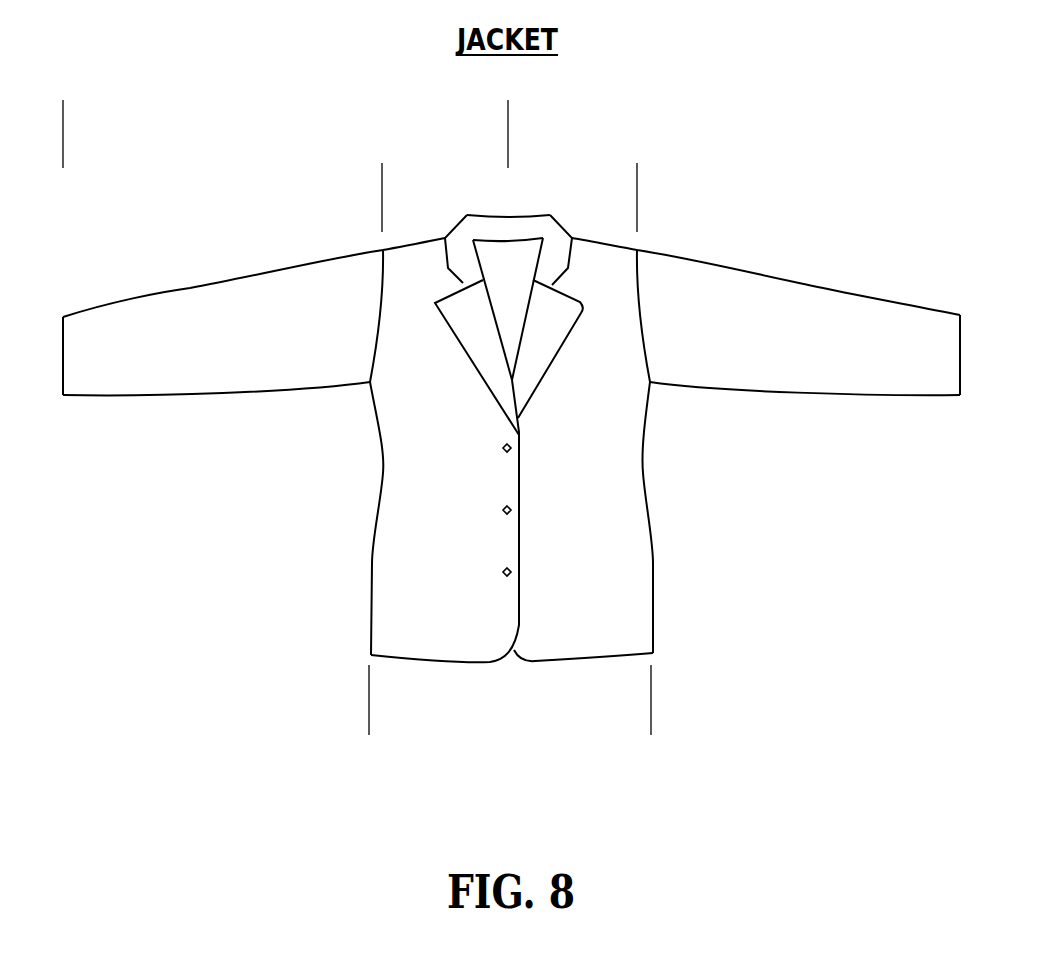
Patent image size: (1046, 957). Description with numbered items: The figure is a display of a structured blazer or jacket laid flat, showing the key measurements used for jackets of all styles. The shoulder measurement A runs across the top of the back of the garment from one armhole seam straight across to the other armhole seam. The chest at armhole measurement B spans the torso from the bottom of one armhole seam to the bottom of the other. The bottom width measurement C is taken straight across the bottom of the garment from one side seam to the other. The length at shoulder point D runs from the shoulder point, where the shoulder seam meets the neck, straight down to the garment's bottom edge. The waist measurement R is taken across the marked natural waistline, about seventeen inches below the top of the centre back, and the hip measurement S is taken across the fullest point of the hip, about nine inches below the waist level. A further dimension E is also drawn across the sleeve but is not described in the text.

The shoulder measurement A is at (625, 202).
The chest at armhole measurement B is at (638, 382).
The bottom width measurement C is at (381, 723).
The length at shoulder point D is at (578, 643).
The sleeve length from center back dimension E is at (496, 133).
The waist measurement R is at (631, 473).
The hip measurement S is at (641, 565).